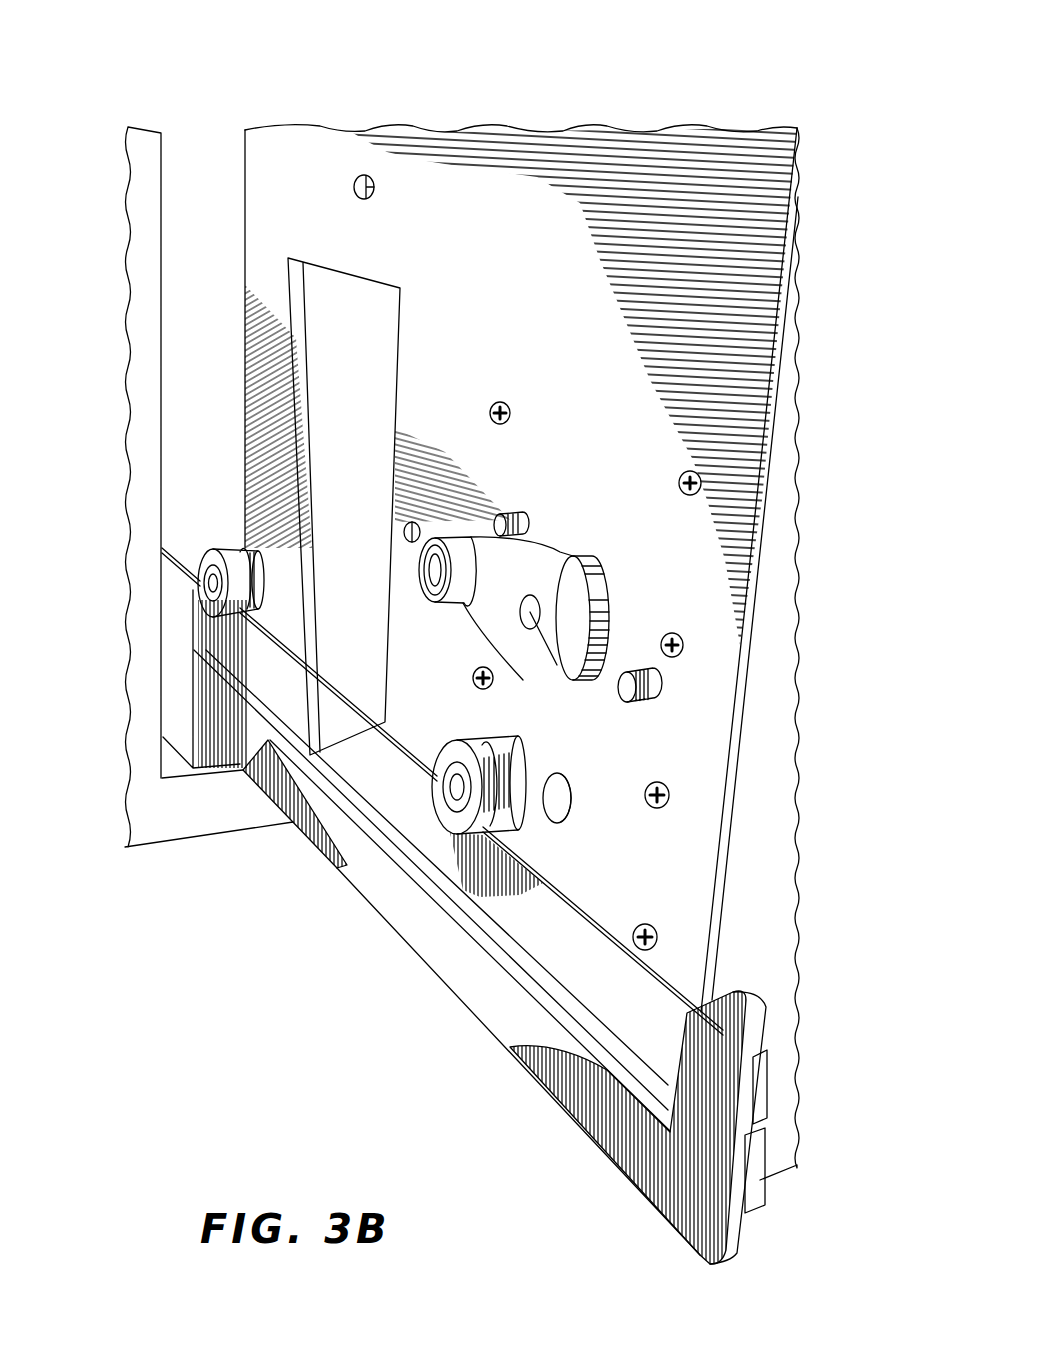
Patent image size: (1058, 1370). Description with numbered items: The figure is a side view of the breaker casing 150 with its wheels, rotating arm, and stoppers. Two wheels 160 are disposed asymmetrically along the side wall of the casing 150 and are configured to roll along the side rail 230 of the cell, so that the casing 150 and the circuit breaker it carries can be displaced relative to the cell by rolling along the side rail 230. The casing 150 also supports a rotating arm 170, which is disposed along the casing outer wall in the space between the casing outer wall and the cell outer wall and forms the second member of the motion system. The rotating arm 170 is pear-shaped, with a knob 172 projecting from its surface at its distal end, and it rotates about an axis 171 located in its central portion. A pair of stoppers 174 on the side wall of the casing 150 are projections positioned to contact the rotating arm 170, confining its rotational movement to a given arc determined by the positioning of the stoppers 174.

The casing 150 is at (655, 178).
The wheel 160 is at (450, 786).
The rotating arm 170 is at (523, 680).
The axis 171 is at (562, 677).
The knob 172 is at (418, 570).
The stoppers 174 is at (523, 512).
The side rail 230 is at (337, 866).